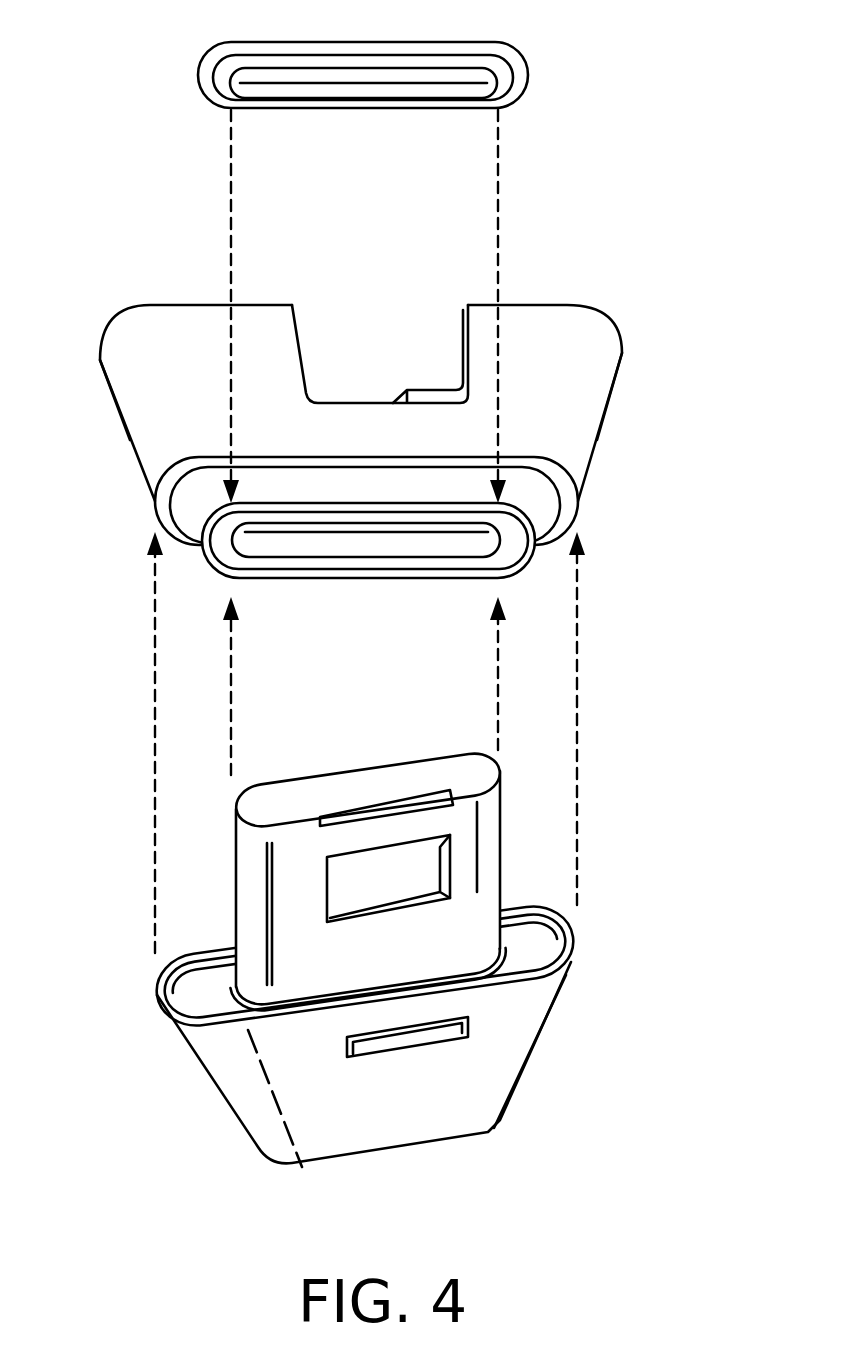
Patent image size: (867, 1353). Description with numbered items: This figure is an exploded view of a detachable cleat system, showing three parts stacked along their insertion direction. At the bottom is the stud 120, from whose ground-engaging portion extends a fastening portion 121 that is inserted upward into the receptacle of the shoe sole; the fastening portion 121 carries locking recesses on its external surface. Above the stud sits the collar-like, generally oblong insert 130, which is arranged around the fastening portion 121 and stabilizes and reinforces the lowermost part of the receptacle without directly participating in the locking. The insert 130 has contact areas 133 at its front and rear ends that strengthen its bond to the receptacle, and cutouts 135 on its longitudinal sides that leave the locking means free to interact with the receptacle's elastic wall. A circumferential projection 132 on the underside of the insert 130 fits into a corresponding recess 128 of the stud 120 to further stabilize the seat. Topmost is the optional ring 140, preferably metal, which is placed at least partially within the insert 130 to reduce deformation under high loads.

The stud 120 is at (357, 1034).
The fastening portion 121 is at (458, 905).
The recess 128 is at (215, 1005).
The insert 130 is at (387, 428).
The circumferential projection 132 is at (510, 542).
The contact areas 133 is at (140, 362).
The cutouts 135 is at (383, 316).
The ring 140 is at (513, 47).